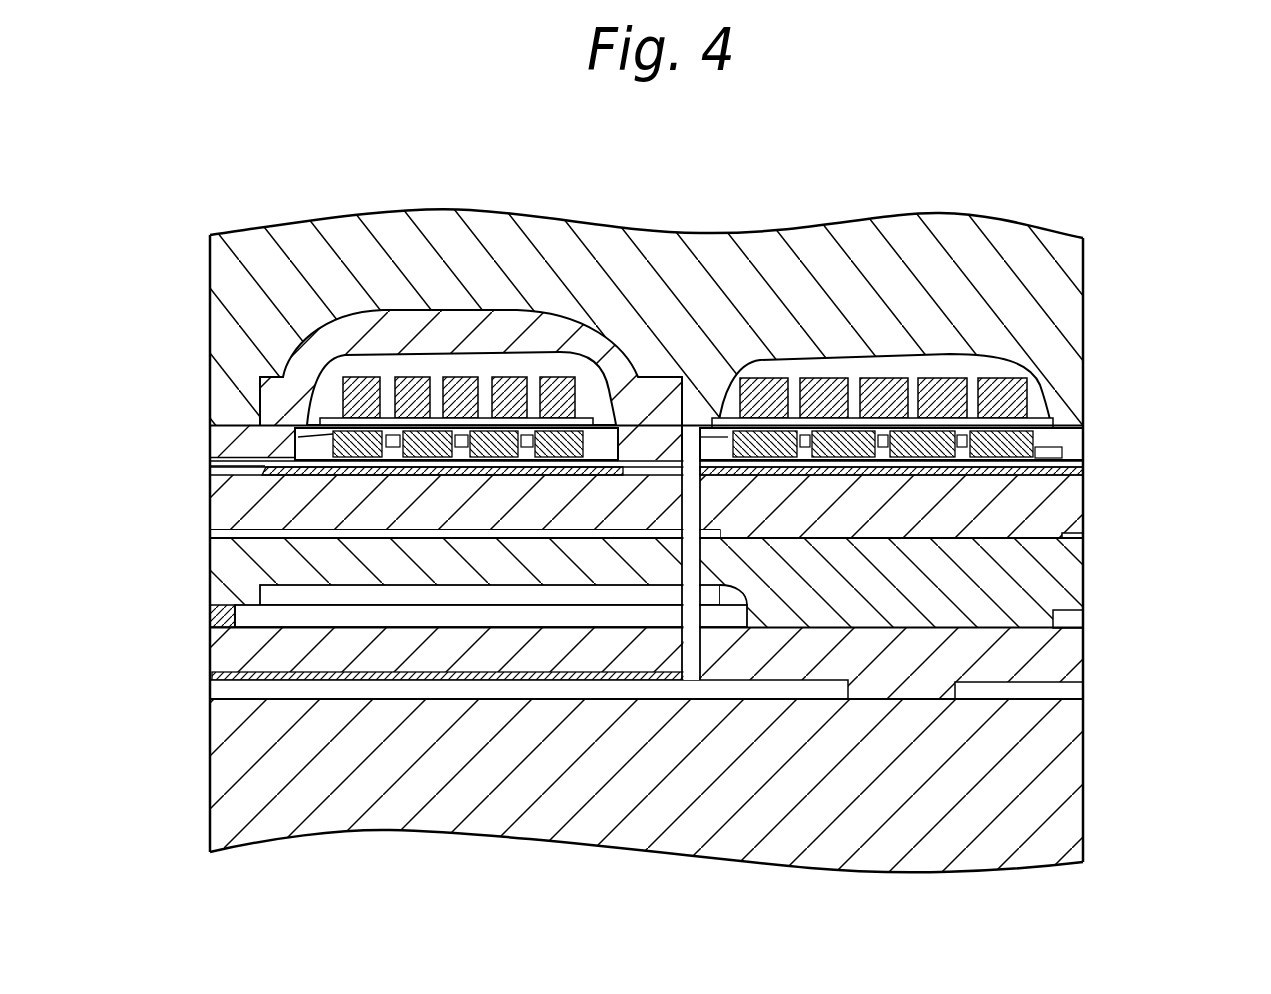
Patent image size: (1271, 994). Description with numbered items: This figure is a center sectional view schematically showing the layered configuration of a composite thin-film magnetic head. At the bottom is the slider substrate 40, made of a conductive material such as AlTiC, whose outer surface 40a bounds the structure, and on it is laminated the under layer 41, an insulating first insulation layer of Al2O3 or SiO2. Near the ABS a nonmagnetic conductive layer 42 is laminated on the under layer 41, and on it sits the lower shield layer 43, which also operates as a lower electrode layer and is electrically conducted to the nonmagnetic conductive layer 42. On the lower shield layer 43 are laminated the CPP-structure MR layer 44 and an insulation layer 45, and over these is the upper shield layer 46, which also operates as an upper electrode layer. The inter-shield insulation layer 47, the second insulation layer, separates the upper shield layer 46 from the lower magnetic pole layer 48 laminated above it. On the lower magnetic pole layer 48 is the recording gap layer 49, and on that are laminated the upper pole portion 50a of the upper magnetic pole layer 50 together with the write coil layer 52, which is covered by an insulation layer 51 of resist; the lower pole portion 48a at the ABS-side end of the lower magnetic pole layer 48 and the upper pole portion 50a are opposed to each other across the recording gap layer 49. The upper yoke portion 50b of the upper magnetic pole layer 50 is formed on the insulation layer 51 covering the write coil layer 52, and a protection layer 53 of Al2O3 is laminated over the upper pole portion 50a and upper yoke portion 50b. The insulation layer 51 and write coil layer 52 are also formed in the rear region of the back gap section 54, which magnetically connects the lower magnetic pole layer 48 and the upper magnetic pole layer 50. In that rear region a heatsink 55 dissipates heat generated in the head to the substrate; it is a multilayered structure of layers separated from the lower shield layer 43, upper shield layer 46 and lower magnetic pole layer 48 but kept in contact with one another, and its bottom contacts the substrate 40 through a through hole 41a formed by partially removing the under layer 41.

The slider substrate 40 is at (733, 833).
The substrate side surface 40a is at (207, 790).
The under layer 41 is at (225, 693).
The through hole 41a is at (947, 690).
The nonmagnetic conductive layer 42 is at (208, 677).
The lower shield layer 43 is at (240, 653).
The MR layer 44 is at (213, 613).
The insulation layer 45 is at (497, 593).
The upper shield layer 46 is at (227, 578).
The inter-shield insulation layer 47 is at (217, 533).
The lower magnetic pole layer 48 is at (250, 510).
The lower pole portion 48a is at (223, 488).
The recording gap layer 49 is at (222, 457).
The upper magnetic pole layer 50 is at (328, 407).
The upper pole portion 50a is at (227, 442).
The upper yoke portion 50b is at (400, 355).
The insulation layer 51 is at (305, 335).
The write coil layer 52 is at (580, 445).
The protection layer 53 is at (643, 257).
The back gap section 54 is at (654, 440).
The heatsink 55 is at (1190, 472).